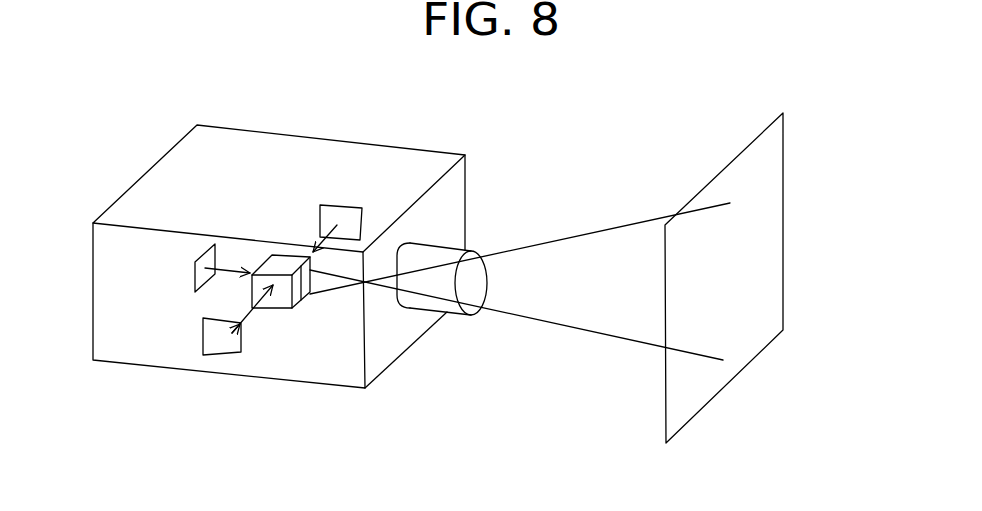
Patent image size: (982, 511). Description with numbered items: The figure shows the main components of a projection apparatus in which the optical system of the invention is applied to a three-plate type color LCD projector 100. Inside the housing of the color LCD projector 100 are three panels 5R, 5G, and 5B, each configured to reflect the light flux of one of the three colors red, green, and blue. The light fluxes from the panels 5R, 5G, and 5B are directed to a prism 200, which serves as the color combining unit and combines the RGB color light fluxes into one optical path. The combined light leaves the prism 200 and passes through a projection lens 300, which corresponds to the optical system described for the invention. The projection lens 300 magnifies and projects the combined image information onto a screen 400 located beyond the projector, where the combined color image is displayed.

The color LCD projector 100 is at (147, 172).
The panel 5B is at (343, 205).
The panel 5G is at (193, 270).
The panel 5R is at (203, 333).
The prism 200 is at (288, 309).
The projection lens 300 is at (451, 314).
The screen 400 is at (783, 235).